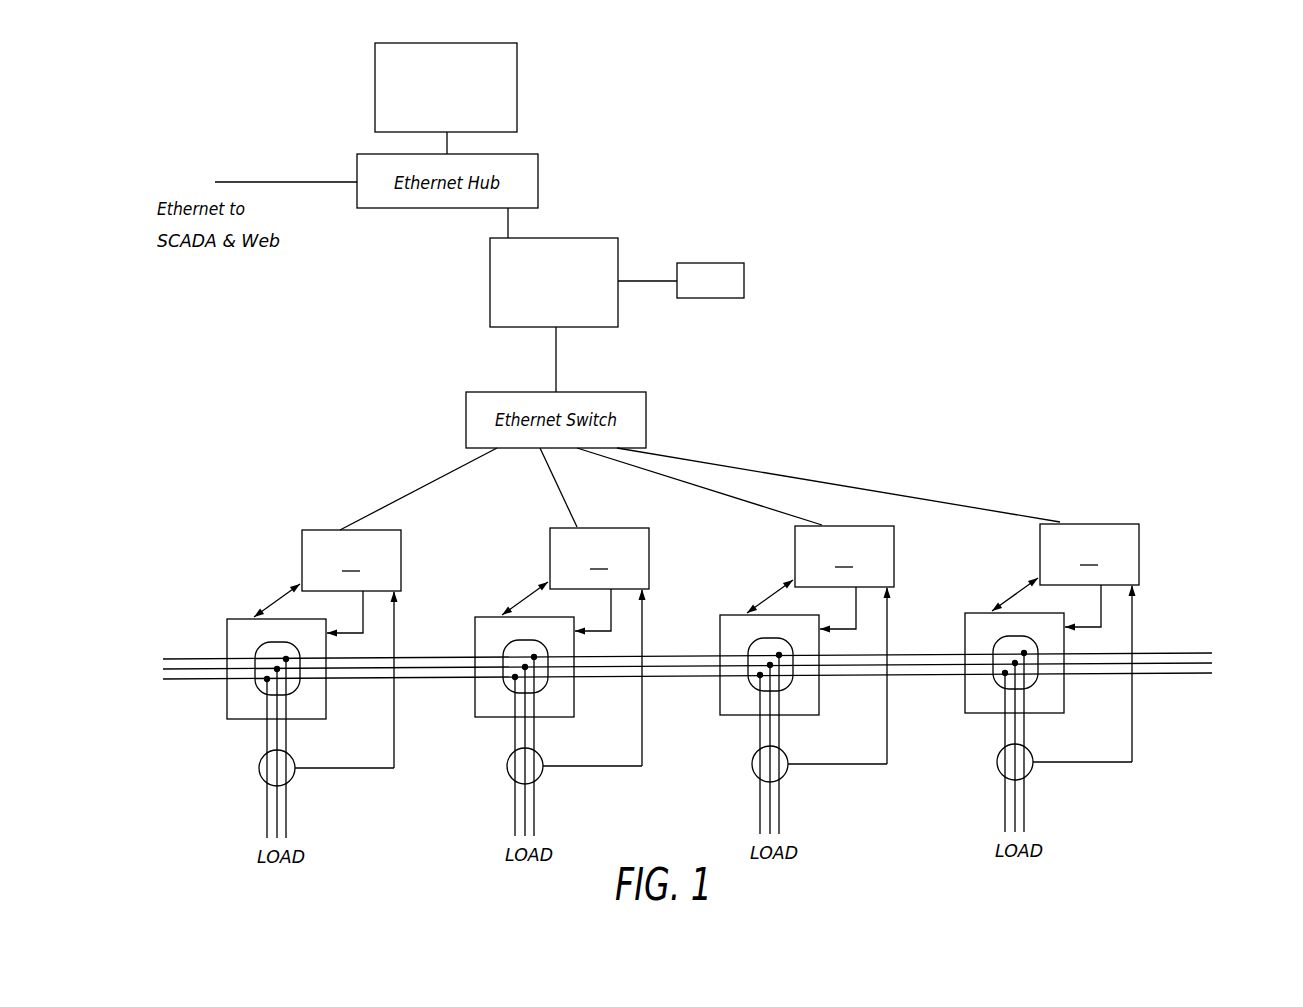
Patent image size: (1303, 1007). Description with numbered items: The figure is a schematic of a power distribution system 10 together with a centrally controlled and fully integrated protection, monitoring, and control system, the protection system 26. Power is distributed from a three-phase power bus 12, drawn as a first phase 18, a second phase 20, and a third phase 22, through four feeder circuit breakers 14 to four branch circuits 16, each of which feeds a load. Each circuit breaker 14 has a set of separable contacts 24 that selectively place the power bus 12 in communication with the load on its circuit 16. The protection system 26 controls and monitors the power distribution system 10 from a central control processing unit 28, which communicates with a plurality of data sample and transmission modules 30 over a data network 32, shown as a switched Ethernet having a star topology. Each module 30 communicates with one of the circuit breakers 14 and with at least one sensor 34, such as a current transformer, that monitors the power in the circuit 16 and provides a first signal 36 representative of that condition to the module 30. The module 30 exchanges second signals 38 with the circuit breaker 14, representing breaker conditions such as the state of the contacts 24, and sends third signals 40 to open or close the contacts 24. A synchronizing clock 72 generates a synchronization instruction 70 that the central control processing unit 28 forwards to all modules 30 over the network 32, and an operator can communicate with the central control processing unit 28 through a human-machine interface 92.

The power distribution system 10 is at (180, 575).
The power bus 12 is at (700, 658).
The circuit breaker 14 is at (227, 632).
The branch circuit 16 is at (267, 738).
The first phase 18 is at (1212, 653).
The second phase 20 is at (1212, 663).
The third phase 22 is at (1212, 673).
The separable contacts 24 is at (276, 642).
The protection system 26 is at (1056, 362).
The central control processing unit 28 is at (490, 278).
The data sample and transmission module 30 is at (720, 557).
The data network 32 is at (556, 355).
The sensor 34 is at (259, 770).
The first signal 36 is at (350, 769).
The second signal 38 is at (277, 596).
The third signal 40 is at (363, 612).
The synchronization instruction 70 is at (636, 281).
The synchronizing clock 72 is at (710, 298).
The human-machine interface 92 is at (432, 43).